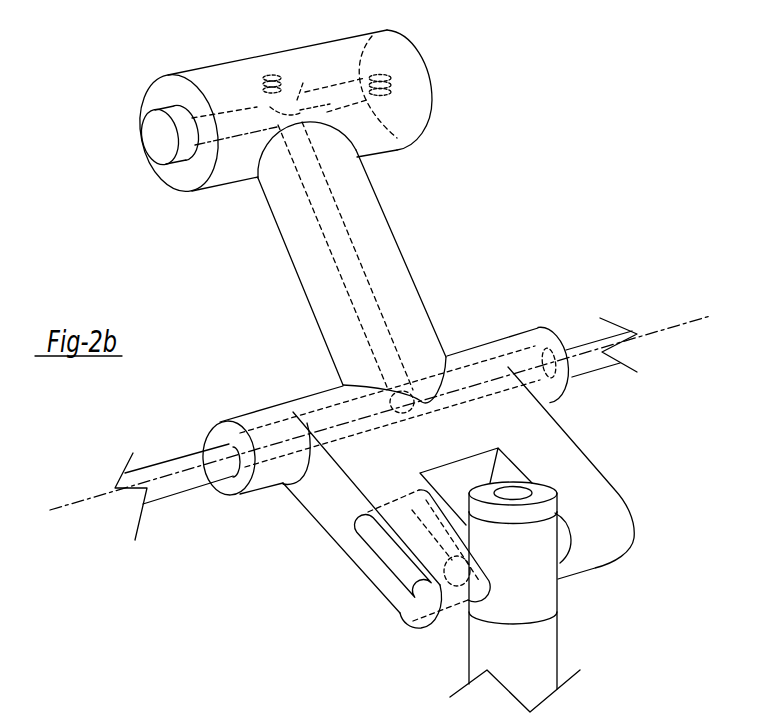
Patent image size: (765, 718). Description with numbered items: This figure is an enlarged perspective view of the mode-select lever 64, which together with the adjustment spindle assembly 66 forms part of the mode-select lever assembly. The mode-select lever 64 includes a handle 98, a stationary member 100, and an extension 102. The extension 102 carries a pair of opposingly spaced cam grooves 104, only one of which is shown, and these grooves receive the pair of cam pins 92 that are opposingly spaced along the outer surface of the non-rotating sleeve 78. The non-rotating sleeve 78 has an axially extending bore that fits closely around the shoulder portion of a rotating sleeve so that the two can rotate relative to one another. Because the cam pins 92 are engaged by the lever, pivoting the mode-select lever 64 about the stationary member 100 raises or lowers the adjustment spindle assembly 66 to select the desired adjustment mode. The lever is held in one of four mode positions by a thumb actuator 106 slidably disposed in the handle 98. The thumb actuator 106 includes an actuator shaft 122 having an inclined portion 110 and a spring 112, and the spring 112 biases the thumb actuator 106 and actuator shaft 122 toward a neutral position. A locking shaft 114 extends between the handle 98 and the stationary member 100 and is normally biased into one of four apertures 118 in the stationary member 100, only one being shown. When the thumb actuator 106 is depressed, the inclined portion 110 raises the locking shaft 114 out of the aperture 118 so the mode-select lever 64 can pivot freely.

The mode-select lever 64 is at (416, 285).
The adjustment spindle assembly 66 is at (557, 647).
The non-rotating sleeve 78 is at (550, 585).
The cam pins 92 is at (457, 580).
The handle 98 is at (348, 37).
The stationary member 100 is at (172, 465).
The extension 102 is at (362, 568).
The cam grooves 104 is at (403, 592).
The thumb actuator 106 is at (153, 140).
The inclined portion 110 is at (304, 100).
The spring 112 is at (265, 89).
The locking shaft 114 is at (340, 220).
The aperture 118 is at (407, 410).
The actuator shaft 122 is at (215, 110).